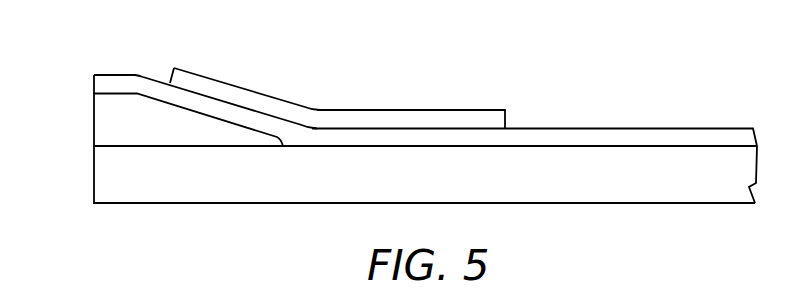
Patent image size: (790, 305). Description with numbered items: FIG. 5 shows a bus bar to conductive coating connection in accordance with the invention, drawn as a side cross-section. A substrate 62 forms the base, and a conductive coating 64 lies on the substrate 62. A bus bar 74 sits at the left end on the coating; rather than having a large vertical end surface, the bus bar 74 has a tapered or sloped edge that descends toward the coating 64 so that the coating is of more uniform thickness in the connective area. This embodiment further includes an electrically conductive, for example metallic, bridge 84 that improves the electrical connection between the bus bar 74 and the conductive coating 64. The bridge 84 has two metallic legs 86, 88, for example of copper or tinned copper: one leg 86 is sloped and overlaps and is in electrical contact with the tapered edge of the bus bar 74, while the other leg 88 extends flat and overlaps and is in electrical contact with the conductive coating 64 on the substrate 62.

The substrate 62 is at (170, 185).
The conductive coating 64 is at (635, 129).
The bus bar 74 is at (112, 122).
The bridge 84 is at (342, 98).
The leg 86 is at (230, 82).
The leg 88 is at (448, 110).